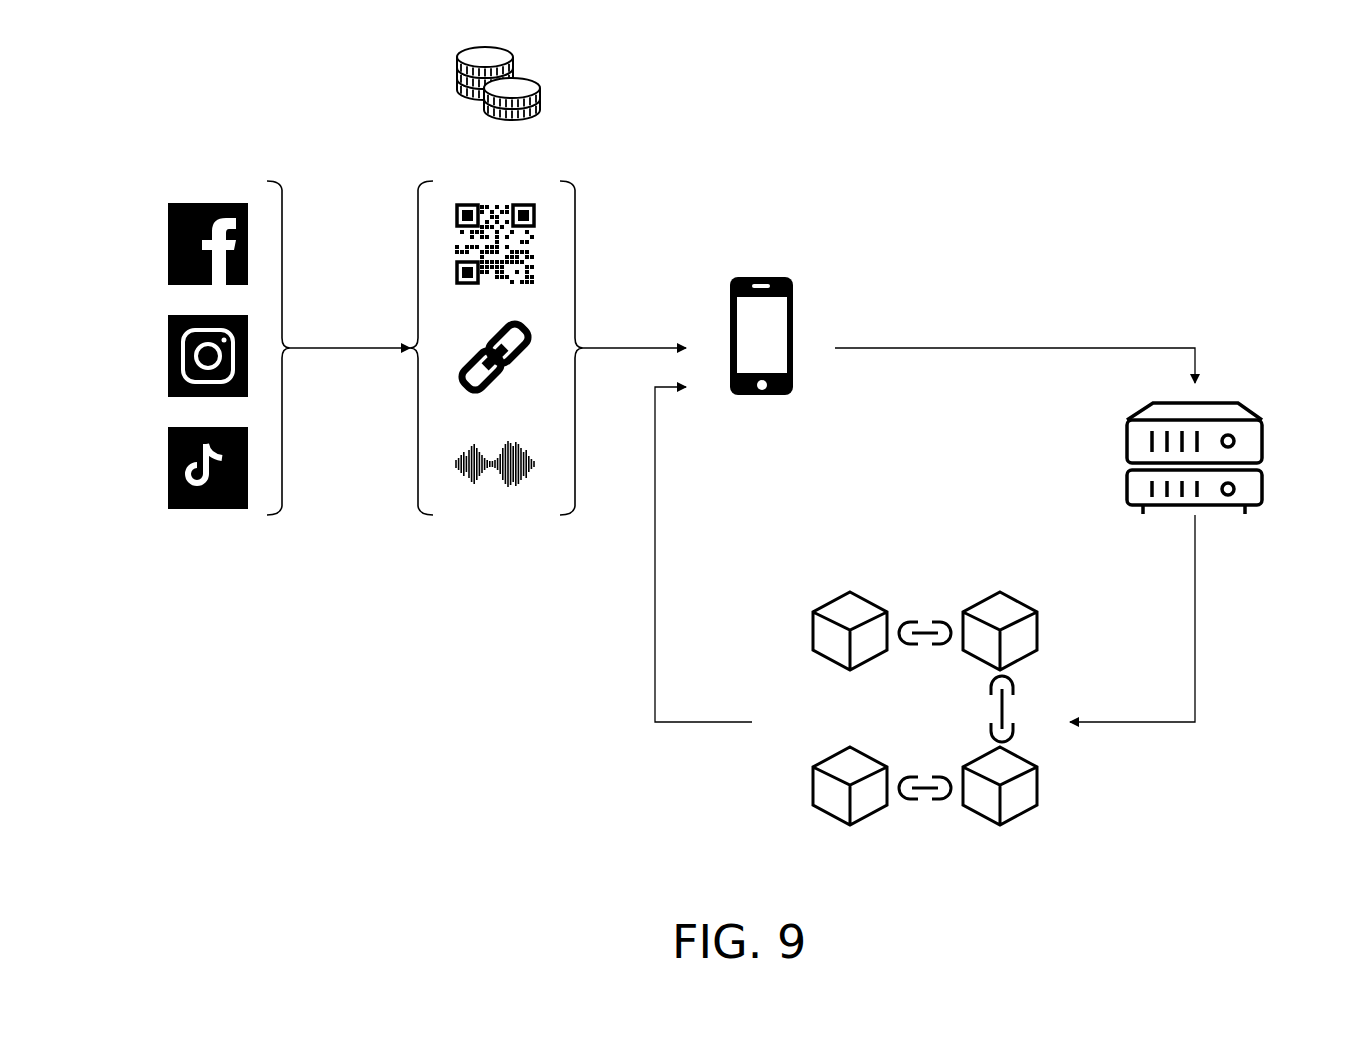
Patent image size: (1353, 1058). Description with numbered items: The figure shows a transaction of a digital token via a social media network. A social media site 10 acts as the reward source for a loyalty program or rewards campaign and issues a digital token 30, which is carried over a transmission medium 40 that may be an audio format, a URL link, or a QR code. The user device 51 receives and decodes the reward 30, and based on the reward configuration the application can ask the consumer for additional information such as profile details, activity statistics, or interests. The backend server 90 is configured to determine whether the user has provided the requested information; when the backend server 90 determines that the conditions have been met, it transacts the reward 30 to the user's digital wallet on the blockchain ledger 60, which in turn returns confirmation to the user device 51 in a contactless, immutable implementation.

The social media site 10 is at (289, 333).
The digital token 30 is at (512, 81).
The transmission medium 40 is at (548, 376).
The user device 51 is at (962, 366).
The blockchain ledger 60 is at (846, 606).
The backend server 90 is at (1200, 562).